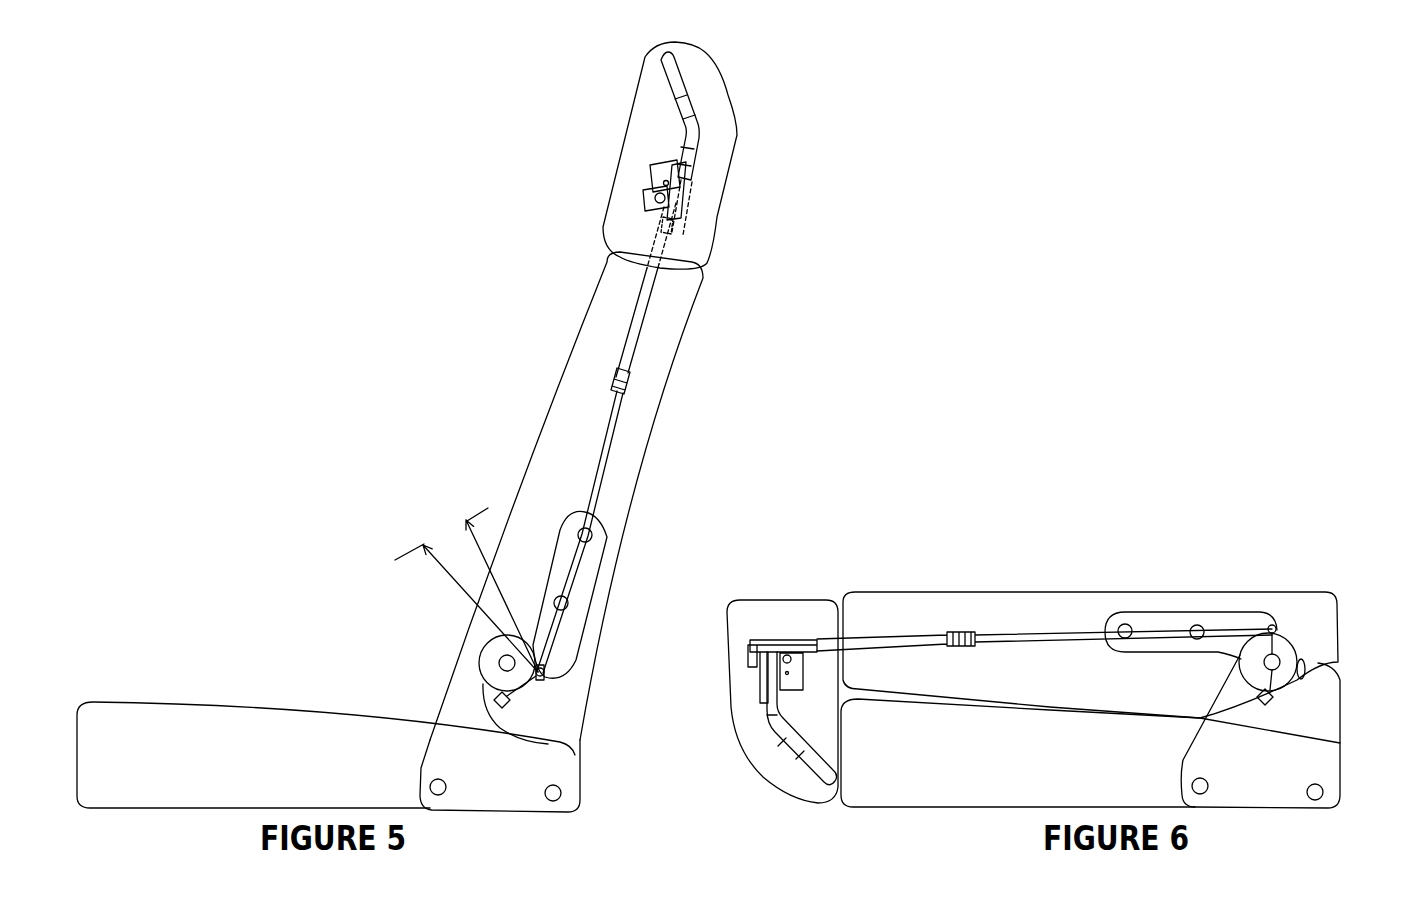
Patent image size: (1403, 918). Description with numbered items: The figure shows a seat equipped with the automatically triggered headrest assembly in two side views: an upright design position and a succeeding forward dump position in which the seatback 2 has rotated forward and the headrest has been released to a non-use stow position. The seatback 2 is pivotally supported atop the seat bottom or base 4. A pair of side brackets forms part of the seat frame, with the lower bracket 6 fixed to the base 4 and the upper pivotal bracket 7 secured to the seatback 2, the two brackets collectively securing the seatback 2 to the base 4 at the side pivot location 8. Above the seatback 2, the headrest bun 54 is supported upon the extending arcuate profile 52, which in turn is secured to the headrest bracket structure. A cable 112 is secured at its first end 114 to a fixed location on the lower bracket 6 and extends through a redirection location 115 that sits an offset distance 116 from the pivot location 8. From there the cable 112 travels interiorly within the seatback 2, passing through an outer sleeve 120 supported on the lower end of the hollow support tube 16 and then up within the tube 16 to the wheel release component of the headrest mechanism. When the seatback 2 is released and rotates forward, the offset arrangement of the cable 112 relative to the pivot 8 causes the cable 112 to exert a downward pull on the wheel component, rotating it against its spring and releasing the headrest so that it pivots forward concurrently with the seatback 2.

In FIG. 5, the seatback 2 is at (570, 357).
In FIG. 6, the seatback 2 is at (967, 591).
In FIG. 5, the seat bottom or base 4 is at (303, 708).
In FIG. 6, the seat bottom or base 4 is at (872, 591).
In FIG. 5, the lower bracket 6 is at (583, 742).
In FIG. 6, the lower bracket 6 is at (1318, 662).
In FIG. 5, the upper pivotal bracket 7 is at (567, 523).
In FIG. 6, the upper pivotal bracket 7 is at (1140, 612).
In FIG. 5, the side pivot location 8 is at (503, 658).
In FIG. 6, the side pivot location 8 is at (1285, 650).
In FIG. 5, the support tube 16 is at (643, 322).
In FIG. 5, the extending arcuate profile 52 is at (699, 110).
In FIG. 6, the extending arcuate profile 52 is at (783, 747).
In FIG. 5, the headrest bun 54 is at (615, 177).
In FIG. 6, the headrest bun 54 is at (773, 599).
In FIG. 5, the cable 112 is at (593, 495).
In FIG. 6, the cable 112 is at (1063, 631).
In FIG. 5, the first end of cable 114 is at (496, 699).
In FIG. 6, the first end of cable 114 is at (1302, 655).
In FIG. 5, the redirection location 115 is at (563, 667).
In FIG. 6, the redirection location 115 is at (1272, 625).
In FIG. 5, the offset distance 116 is at (421, 546).
In FIG. 5, the outer sleeve 120 is at (617, 423).